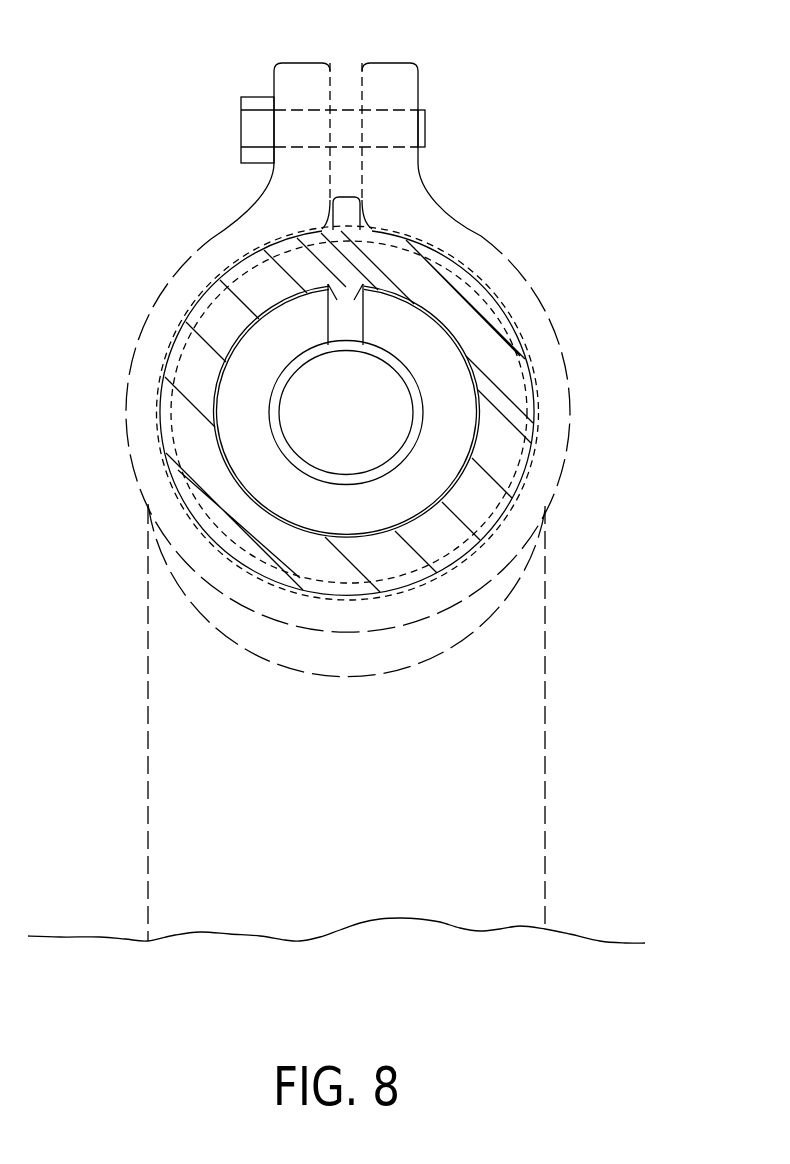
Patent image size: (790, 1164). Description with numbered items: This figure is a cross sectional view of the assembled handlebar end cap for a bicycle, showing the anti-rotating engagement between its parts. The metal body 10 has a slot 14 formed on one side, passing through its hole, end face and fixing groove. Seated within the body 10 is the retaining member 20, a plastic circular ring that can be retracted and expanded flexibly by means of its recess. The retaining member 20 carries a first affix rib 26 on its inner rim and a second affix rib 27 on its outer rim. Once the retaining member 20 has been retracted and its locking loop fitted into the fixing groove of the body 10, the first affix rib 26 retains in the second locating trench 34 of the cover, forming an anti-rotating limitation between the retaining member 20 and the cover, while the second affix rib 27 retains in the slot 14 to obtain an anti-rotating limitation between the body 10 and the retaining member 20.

The body 10 is at (243, 427).
The slot 14 is at (347, 98).
The retaining member 20 is at (335, 271).
The first affix rib 26 is at (328, 347).
The second affix rib 27 is at (347, 203).
The second locating trench 34 is at (333, 300).